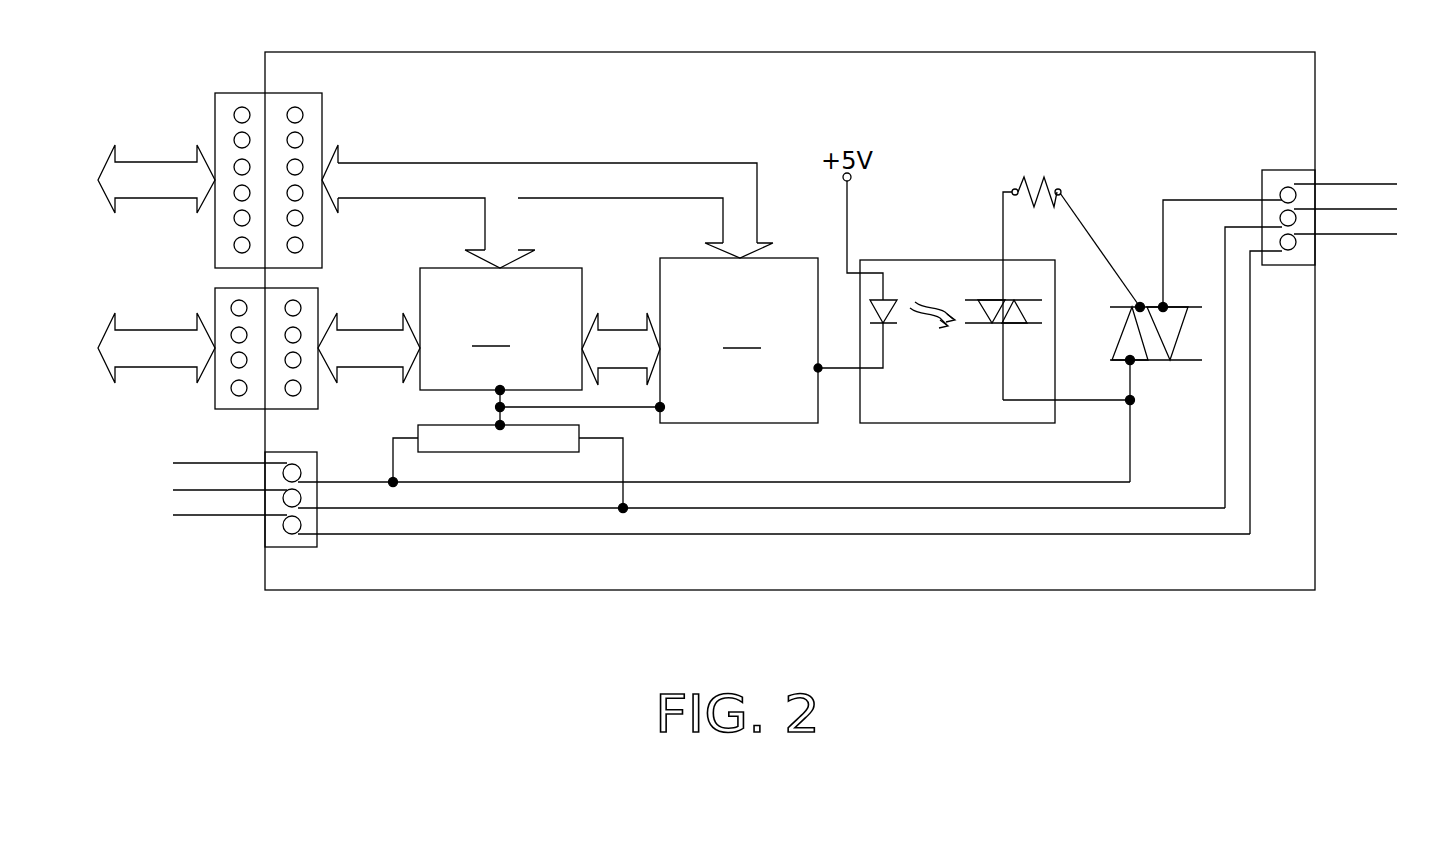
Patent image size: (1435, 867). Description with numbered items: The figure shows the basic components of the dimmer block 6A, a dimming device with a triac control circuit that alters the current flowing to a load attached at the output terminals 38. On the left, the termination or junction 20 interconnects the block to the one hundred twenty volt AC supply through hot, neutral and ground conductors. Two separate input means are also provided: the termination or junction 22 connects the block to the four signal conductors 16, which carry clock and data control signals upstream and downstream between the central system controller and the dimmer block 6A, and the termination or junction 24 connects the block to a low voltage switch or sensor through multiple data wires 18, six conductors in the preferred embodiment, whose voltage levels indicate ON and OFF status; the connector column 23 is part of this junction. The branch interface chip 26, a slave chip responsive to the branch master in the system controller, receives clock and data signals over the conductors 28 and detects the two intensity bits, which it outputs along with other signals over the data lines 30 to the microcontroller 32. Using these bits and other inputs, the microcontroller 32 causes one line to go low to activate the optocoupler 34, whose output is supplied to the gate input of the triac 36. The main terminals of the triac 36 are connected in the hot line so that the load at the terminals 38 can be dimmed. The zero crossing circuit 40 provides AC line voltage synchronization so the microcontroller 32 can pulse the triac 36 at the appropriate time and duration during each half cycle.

The dimmer block 6A is at (1368, 113).
The signal conductors 16 is at (140, 328).
The data wires 18 is at (165, 162).
The termination or junction 20 is at (287, 547).
The termination or junction 22 is at (280, 402).
The connector pin column 23 is at (285, 98).
The termination or junction 24 is at (317, 120).
The branch interface chip 26 is at (501, 329).
The conductors 28 is at (380, 325).
The data lines 30 is at (627, 325).
The microcontroller 32 is at (739, 340).
The optocoupler 34 is at (937, 257).
The triac 36 is at (1180, 342).
The output terminals 38 is at (1273, 170).
The zero crossing circuit 40 is at (430, 430).